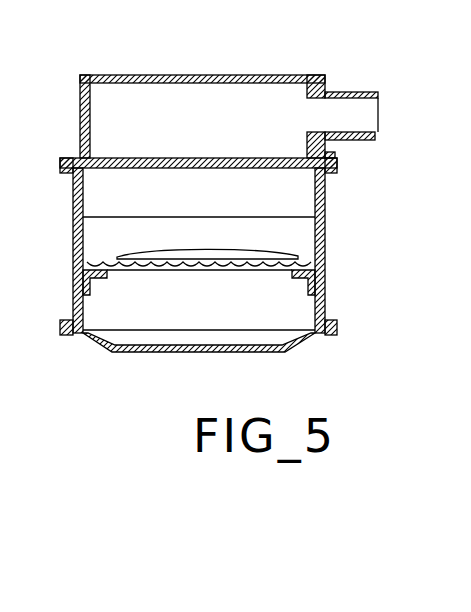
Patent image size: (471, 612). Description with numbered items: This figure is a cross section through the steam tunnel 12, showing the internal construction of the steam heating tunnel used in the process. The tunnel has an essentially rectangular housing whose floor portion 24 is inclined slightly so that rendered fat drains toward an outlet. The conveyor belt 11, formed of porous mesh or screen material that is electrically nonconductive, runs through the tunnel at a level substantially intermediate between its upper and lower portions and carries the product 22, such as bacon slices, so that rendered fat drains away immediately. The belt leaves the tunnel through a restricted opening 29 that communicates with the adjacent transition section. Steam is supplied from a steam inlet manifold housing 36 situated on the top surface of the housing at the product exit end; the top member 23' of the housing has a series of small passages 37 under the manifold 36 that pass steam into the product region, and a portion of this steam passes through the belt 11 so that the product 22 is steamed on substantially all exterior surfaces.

The steam inlet manifold housing 36 is at (213, 76).
The small passages 37 is at (168, 157).
The top member 23' is at (198, 183).
The restricted opening 29 is at (100, 228).
The product 22 is at (220, 252).
The conveyor belt 11 is at (308, 262).
The steam tunnel 12 is at (345, 305).
The floor portion 24 is at (248, 355).